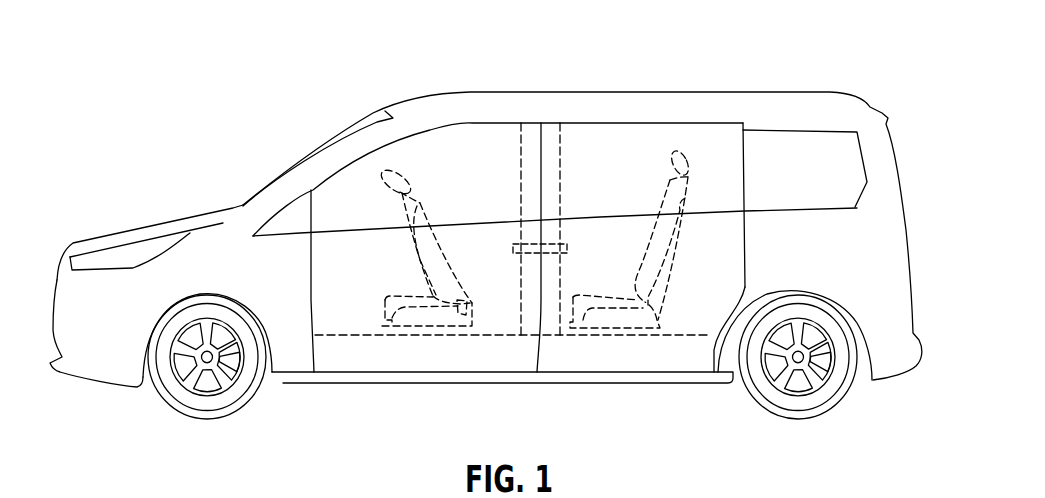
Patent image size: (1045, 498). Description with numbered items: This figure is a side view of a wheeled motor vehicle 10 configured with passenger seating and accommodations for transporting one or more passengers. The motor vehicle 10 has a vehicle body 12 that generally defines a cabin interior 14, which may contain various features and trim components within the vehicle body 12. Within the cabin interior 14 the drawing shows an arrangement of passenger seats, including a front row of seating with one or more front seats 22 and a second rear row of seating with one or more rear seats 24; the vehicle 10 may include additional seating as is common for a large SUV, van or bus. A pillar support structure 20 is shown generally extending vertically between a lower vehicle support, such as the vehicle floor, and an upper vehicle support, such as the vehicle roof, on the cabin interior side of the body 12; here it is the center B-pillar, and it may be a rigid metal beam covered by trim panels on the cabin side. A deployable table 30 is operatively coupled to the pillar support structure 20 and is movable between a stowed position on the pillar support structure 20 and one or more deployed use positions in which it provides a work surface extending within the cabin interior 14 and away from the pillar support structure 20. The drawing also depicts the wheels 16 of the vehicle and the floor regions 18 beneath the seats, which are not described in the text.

The motor vehicle 10 is at (257, 90).
The vehicle body 12 is at (280, 310).
The cabin interior 14 is at (438, 163).
The wheels 16 is at (188, 400).
The seating areas 18 is at (353, 308).
The pillar support structure 20 is at (521, 162).
The front seats 22 is at (417, 318).
The rear seats 24 is at (618, 318).
The deployable table 30 is at (547, 242).